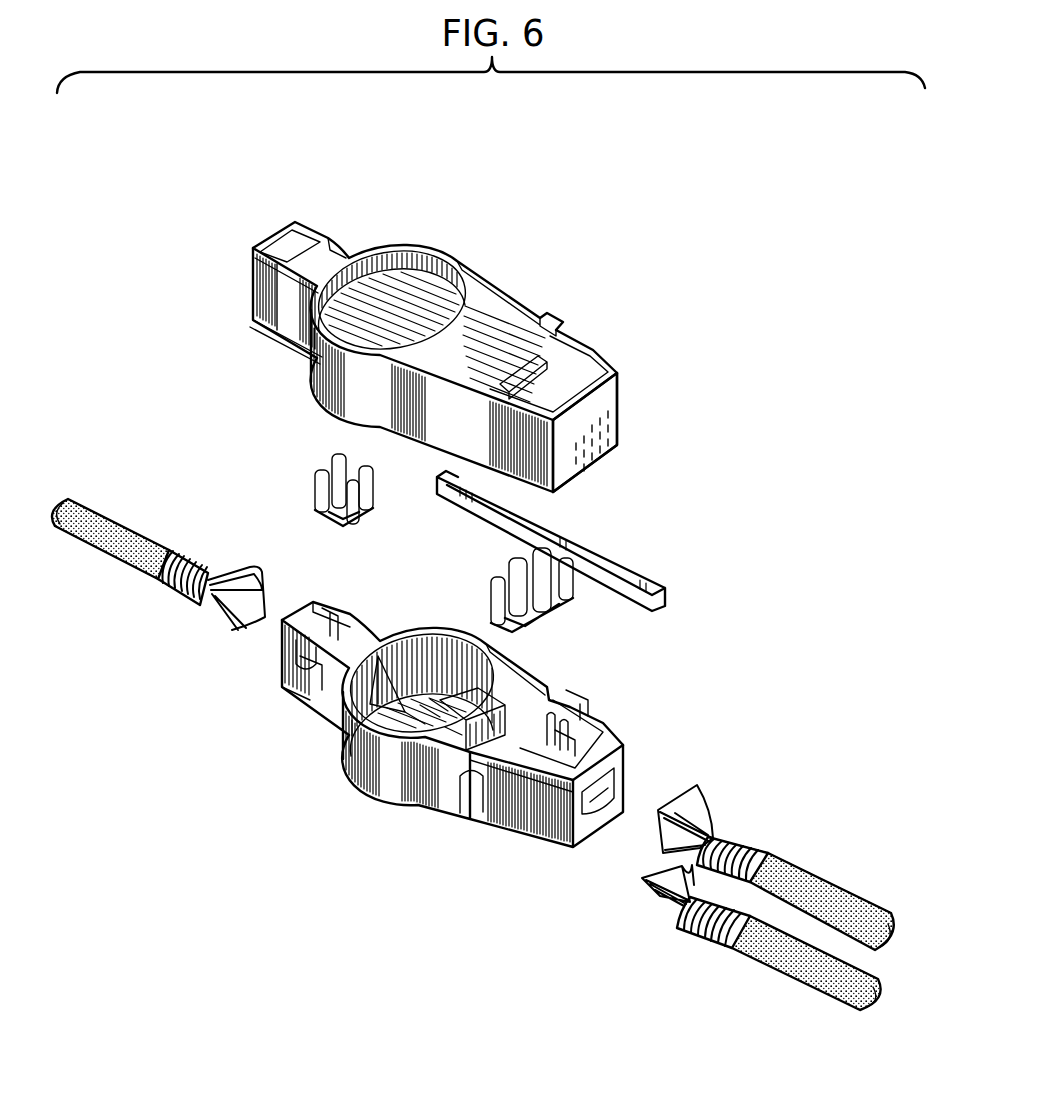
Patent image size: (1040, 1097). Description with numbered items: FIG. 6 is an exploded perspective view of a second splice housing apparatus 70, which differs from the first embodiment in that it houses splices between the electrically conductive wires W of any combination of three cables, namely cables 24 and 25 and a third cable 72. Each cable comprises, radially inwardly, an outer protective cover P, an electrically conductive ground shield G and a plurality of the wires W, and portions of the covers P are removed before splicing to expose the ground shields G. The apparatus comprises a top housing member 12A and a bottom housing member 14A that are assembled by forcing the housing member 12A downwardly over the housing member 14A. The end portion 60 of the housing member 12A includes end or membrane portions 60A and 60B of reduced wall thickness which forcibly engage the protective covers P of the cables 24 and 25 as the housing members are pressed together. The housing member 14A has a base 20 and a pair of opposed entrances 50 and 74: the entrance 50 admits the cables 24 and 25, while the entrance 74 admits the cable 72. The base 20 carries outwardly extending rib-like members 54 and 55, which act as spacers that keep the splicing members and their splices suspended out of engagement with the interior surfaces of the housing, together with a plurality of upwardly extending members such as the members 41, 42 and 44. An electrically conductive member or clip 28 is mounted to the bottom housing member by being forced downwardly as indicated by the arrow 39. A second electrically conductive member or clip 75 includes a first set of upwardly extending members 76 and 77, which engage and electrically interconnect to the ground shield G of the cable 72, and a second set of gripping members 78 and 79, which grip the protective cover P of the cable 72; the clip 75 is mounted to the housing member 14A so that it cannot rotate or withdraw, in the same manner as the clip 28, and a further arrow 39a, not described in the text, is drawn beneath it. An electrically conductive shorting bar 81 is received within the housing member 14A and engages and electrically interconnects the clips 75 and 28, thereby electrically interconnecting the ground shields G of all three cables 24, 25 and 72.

The housing member 12A is at (457, 358).
The housing member 14A is at (464, 677).
The end portion 60 is at (609, 425).
The end or membrane portion 60A is at (602, 437).
The end or membrane portion 60B is at (577, 463).
The splice housing apparatus 70 is at (735, 605).
The cable 72 is at (98, 525).
The entrance 74 is at (296, 590).
The electrically conductive member or clip 75 is at (374, 523).
The upwardly extending member 76 is at (336, 488).
The upwardly extending member 77 is at (362, 486).
The gripping member 78 is at (320, 473).
The gripping member 79 is at (342, 463).
The electrically conductive shorting bar 81 is at (610, 557).
The electrically conductive member or clip 28 is at (570, 609).
The arrow 39 is at (548, 617).
The contact receiving slot 39a is at (343, 533).
The rib-like member 54 is at (437, 640).
The rib-like member 55 is at (485, 692).
The base 20 is at (477, 752).
The upwardly extending member 41 is at (548, 713).
The upwardly extending member 42 is at (580, 713).
The upwardly extending member 44 is at (503, 777).
The entrance 50 is at (609, 769).
The cable 24 is at (838, 885).
The cable 25 is at (790, 965).
The outer protective cover P is at (147, 540).
The electrically conductive ground shield G is at (190, 562).
The wires or conductors W is at (461, 745).